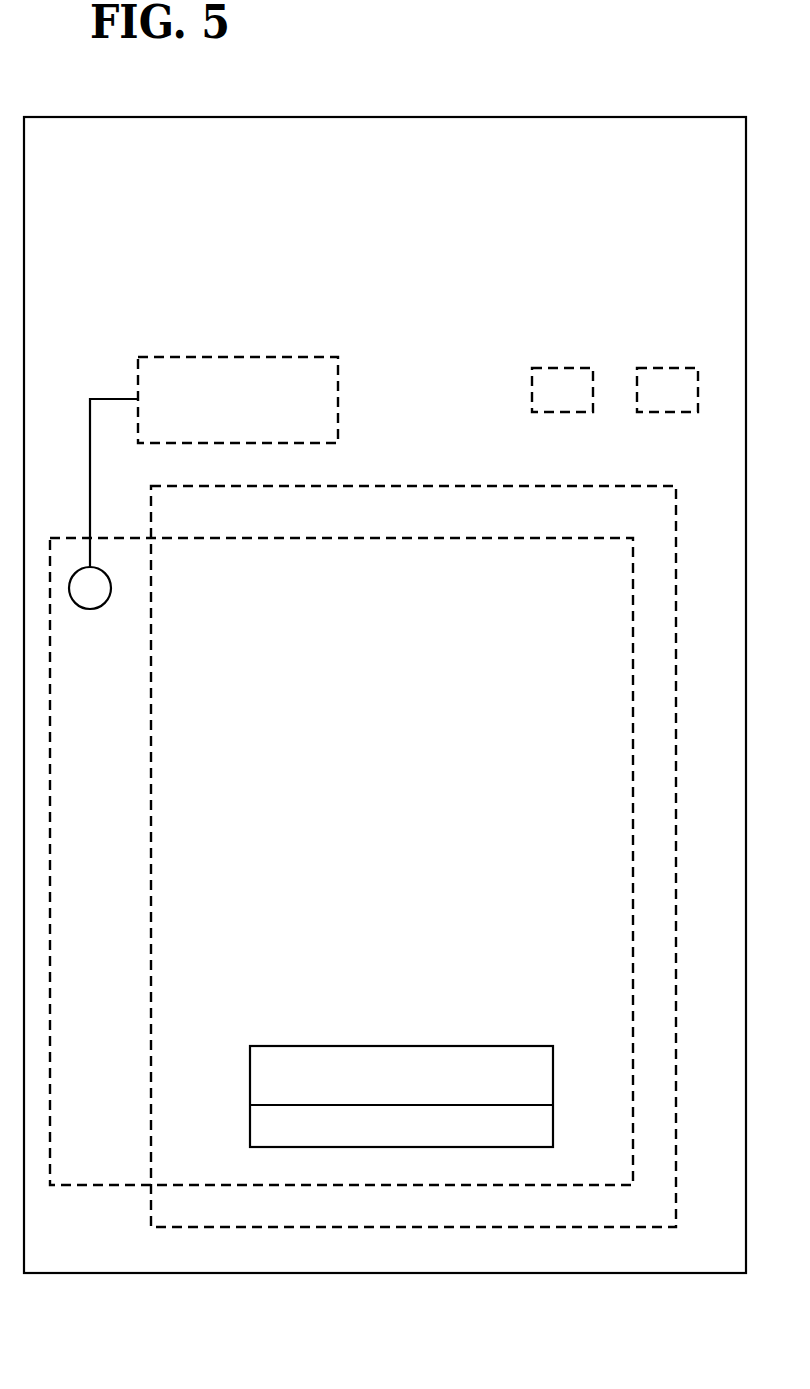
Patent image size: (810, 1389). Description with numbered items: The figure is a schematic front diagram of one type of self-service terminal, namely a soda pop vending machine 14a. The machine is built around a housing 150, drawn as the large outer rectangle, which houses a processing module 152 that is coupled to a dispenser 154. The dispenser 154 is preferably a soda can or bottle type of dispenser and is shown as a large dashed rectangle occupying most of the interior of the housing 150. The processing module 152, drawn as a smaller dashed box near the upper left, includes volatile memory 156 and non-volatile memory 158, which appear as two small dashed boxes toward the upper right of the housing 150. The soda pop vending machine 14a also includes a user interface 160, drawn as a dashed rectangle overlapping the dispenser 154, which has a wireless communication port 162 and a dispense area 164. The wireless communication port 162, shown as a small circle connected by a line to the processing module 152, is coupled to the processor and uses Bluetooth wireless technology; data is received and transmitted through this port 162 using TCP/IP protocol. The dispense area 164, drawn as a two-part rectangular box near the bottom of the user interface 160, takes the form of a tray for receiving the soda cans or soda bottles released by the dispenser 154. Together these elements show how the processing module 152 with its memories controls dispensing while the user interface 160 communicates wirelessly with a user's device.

The soda pop vending machine 14a is at (664, 64).
The housing 150 is at (483, 117).
The processing module 152 is at (302, 357).
The dispenser 154 is at (458, 486).
The volatile memory 156 is at (568, 368).
The non-volatile memory 158 is at (670, 368).
The user interface 160 is at (337, 1185).
The wireless communication port 162 is at (80, 607).
The dispense area 164 is at (365, 1046).